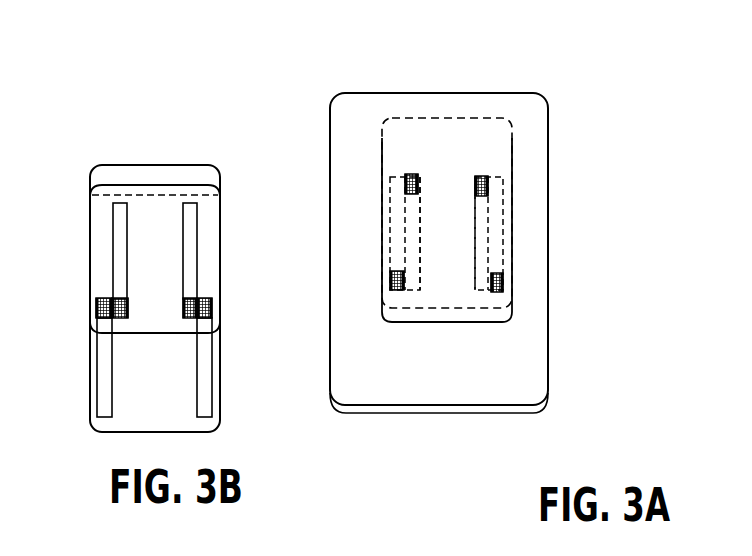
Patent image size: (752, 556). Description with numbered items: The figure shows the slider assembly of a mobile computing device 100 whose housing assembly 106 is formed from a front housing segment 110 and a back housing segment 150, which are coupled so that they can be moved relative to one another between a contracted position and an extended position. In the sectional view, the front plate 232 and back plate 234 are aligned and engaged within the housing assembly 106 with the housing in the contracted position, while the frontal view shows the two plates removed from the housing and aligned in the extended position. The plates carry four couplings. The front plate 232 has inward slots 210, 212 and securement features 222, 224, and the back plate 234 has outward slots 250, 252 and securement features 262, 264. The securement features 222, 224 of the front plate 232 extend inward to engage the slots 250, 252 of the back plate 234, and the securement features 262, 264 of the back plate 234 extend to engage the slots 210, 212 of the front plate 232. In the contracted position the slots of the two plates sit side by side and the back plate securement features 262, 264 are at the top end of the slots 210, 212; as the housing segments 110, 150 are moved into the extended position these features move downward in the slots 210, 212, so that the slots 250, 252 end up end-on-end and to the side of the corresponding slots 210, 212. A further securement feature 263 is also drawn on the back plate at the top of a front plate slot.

In FIG. 3A, the device 100 is at (316, 89).
In FIG. 3A, the housing assembly 106 is at (378, 90).
In FIG. 3A, the front housing segment 110 is at (532, 403).
In FIG. 3A, the back housing segment 150 is at (497, 414).
In FIG. 3A, the slot 210 is at (426, 194).
In FIG. 3B, the slot 210 is at (116, 250).
In FIG. 3A, the slot 212 is at (473, 208).
In FIG. 3B, the slot 212 is at (194, 233).
In FIG. 3A, the securement feature 222 is at (391, 283).
In FIG. 3B, the securement feature 222 is at (124, 304).
In FIG. 3A, the securement feature 224 is at (504, 282).
In FIG. 3B, the securement feature 224 is at (210, 306).
In FIG. 3A, the front plate 232 is at (492, 323).
In FIG. 3B, the front plate 232 is at (132, 164).
In FIG. 3A, the back plate 234 is at (461, 323).
In FIG. 3B, the back plate 234 is at (88, 401).
In FIG. 3A, the slot 250 is at (389, 222).
In FIG. 3B, the slot 250 is at (100, 370).
In FIG. 3A, the slot 252 is at (506, 243).
In FIG. 3B, the slot 252 is at (209, 365).
In FIG. 3A, the securement feature 262 is at (407, 177).
In FIG. 3B, the securement feature 262 is at (100, 305).
In FIG. 3A, the second sensor 263 is at (482, 178).
In FIG. 3B, the securement feature 264 is at (187, 319).